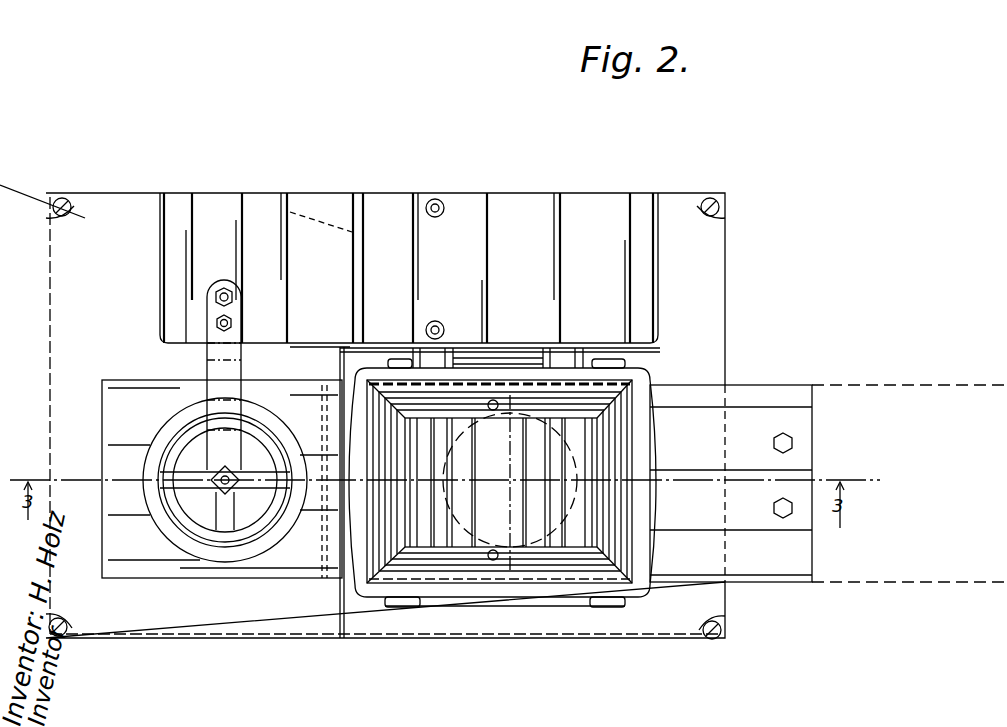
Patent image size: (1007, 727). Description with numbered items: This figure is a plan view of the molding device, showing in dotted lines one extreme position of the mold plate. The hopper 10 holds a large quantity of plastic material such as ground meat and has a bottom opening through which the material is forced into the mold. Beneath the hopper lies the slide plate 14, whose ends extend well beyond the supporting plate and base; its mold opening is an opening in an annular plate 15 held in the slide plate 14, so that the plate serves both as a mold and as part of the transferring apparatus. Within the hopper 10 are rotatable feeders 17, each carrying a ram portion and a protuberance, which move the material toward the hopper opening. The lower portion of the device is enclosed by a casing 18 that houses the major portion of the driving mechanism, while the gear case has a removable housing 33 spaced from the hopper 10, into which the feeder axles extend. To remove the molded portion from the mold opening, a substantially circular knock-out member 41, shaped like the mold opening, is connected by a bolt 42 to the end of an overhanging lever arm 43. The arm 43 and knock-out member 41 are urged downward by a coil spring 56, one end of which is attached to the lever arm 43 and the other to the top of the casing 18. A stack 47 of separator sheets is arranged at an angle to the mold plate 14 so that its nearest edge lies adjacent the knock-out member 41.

The hopper 10 is at (665, 372).
The slide plate 14 is at (752, 567).
The annular plate 15 is at (172, 428).
The feeder 17 is at (537, 478).
The casing 18 is at (716, 259).
The removable housing 33 is at (572, 205).
The knock-out member 41 is at (266, 442).
The bolt 42 is at (218, 486).
The overhanging lever arm 43 is at (216, 366).
The stack of separator sheets 47 is at (318, 552).
The coil spring 56 is at (247, 338).